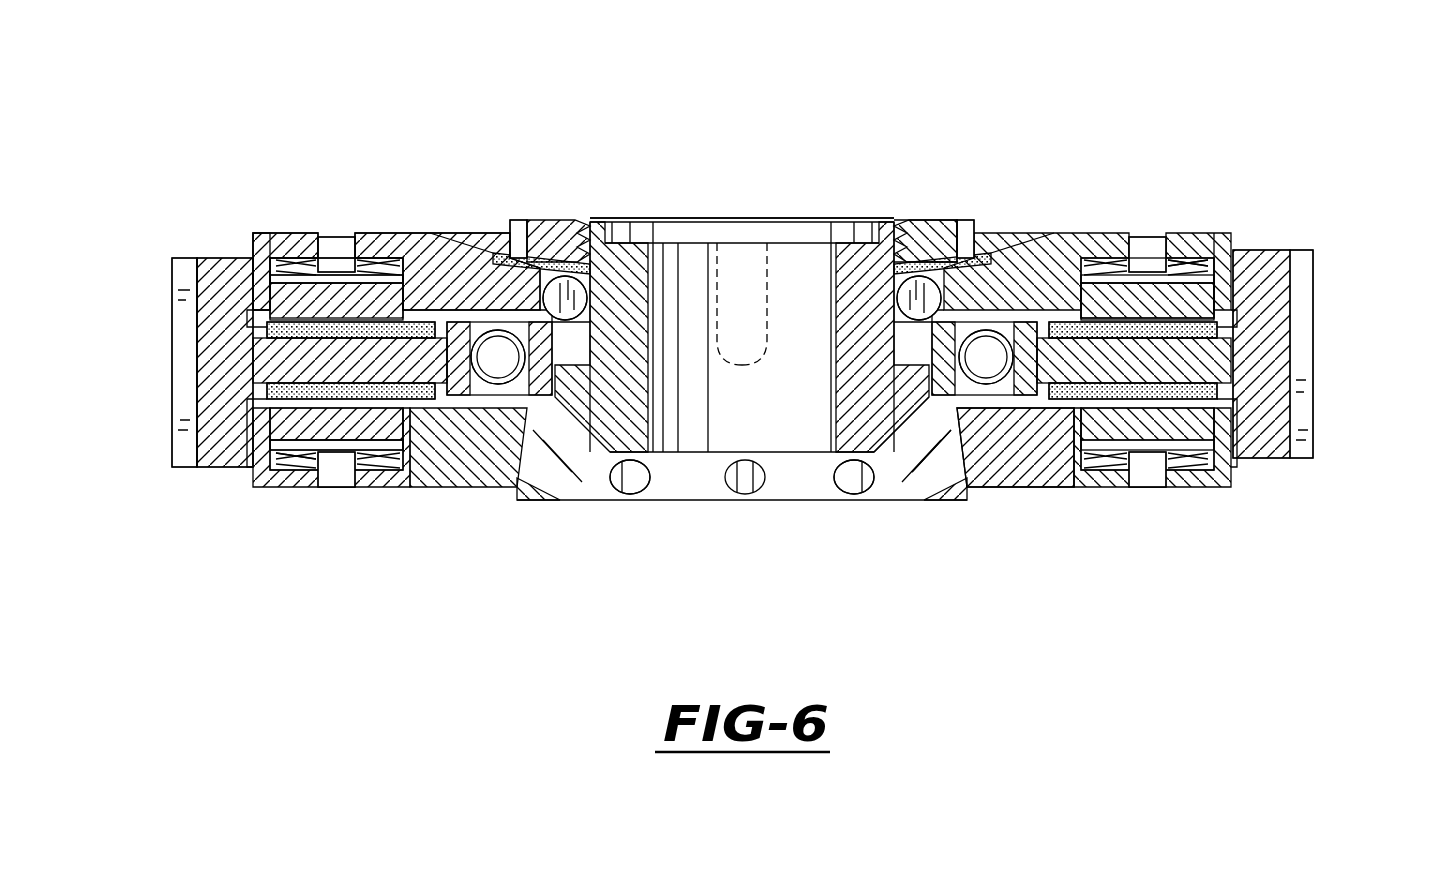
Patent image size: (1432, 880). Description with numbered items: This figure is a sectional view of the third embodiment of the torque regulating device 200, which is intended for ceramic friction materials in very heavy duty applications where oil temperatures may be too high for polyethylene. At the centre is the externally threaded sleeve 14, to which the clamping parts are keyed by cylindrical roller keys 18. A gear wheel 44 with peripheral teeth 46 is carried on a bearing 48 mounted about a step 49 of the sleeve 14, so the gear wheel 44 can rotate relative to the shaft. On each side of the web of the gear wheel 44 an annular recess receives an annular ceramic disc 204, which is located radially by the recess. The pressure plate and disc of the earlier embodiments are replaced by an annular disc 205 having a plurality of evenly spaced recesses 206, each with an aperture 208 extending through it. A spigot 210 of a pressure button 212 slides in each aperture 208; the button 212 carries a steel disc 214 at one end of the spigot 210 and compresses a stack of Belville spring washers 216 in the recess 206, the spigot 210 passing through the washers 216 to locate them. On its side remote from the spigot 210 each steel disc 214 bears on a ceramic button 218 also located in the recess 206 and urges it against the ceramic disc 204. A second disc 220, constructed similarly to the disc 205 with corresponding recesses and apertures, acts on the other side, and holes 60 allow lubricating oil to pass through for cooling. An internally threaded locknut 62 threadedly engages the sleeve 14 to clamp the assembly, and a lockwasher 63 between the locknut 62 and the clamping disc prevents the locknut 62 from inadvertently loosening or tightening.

The torque regulating device 200 is at (660, 194).
The externally threaded sleeve 14 is at (812, 225).
The cylindrical roller key 18 is at (922, 222).
The gear wheel 44 is at (1270, 343).
The peripheral teeth 46 is at (185, 358).
The bearing 48 is at (470, 403).
The step 49 is at (957, 400).
The holes 60 is at (610, 475).
The locknut 62 is at (540, 218).
The lockwasher 63 is at (482, 232).
The annular ceramic disc 204 is at (1073, 318).
The annular disc 205 is at (435, 232).
The recess 206 is at (262, 245).
The aperture 208 is at (335, 232).
The spigot 210 is at (345, 232).
The pressure button 212 is at (1097, 262).
The steel disc 214 is at (1145, 235).
The Belville spring washers 216 is at (1200, 235).
The ceramic button 218 is at (1265, 310).
The disc 220 is at (1030, 478).